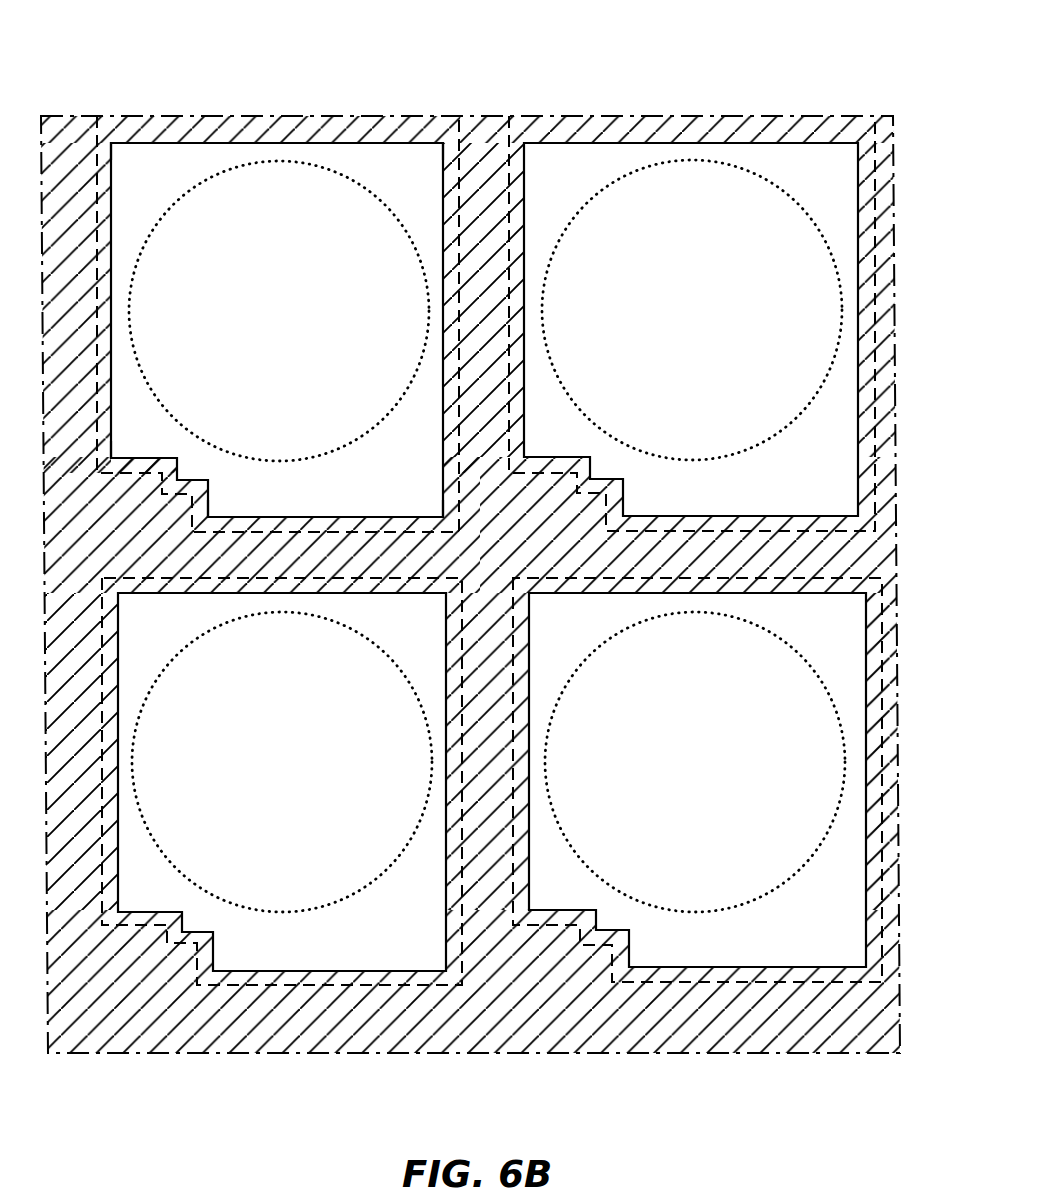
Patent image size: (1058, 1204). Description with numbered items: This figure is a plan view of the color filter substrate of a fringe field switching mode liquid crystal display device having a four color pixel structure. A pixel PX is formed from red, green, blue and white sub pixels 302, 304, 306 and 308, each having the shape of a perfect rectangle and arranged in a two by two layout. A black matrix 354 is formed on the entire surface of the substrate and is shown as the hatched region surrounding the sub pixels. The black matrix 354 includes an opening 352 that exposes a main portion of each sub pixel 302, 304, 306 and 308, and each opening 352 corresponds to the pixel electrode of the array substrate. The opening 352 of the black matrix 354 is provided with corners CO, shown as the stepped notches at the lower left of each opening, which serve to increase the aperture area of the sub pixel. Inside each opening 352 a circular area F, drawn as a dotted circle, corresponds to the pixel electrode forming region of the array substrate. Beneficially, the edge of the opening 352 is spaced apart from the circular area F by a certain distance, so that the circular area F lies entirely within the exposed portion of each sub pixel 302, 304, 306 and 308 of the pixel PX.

The red sub pixel 302 is at (273, 128).
The green sub pixel 304 is at (672, 128).
The blue sub pixel 306 is at (688, 982).
The white sub pixel 308 is at (286, 985).
The opening 352 is at (377, 143).
The black matrix 354 is at (762, 130).
The pixel PX is at (540, 116).
The circular area F is at (185, 195).
The corners CO is at (122, 153).